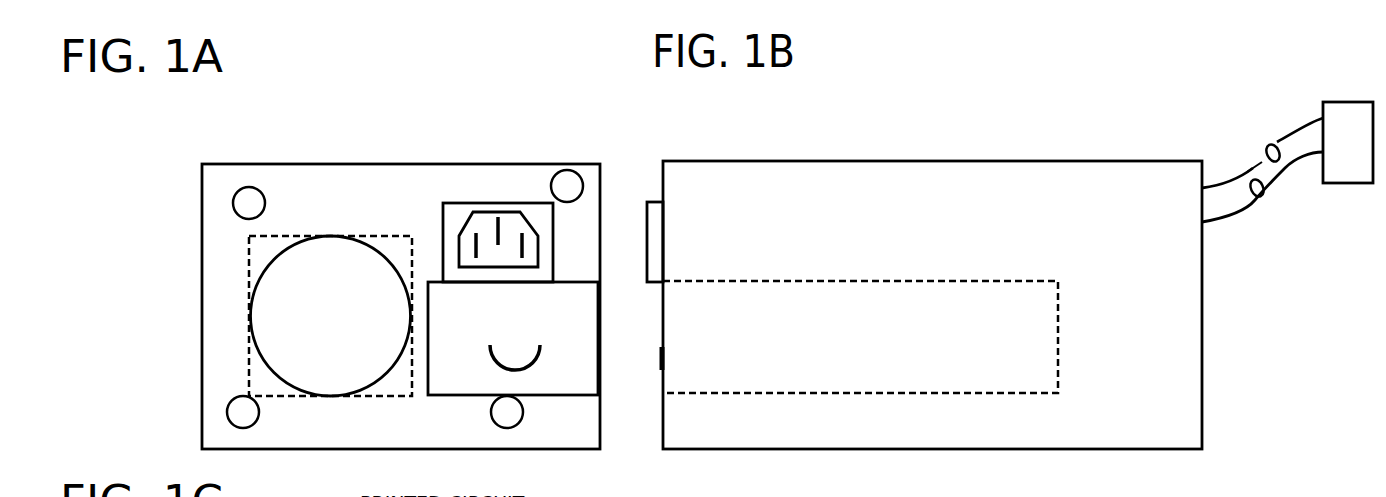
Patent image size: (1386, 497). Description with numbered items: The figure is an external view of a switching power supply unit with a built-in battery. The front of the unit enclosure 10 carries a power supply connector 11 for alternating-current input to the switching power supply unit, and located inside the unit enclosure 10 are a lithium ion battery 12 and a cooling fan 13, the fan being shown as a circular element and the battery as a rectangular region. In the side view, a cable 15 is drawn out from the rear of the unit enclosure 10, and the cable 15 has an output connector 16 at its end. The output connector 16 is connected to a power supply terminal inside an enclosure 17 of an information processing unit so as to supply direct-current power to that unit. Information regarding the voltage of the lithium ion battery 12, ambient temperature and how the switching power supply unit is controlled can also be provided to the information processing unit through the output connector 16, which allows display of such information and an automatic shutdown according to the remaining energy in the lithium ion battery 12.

In FIG. 1A, the unit enclosure 10 is at (487, 163).
In FIG. 1B, the unit enclosure 10 is at (900, 161).
In FIG. 1A, the power supply connector 11 is at (553, 222).
In FIG. 1B, the power supply connector 11 is at (647, 240).
In FIG. 1A, the lithium ion battery 12 is at (553, 346).
In FIG. 1B, the lithium ion battery 12 is at (642, 425).
In FIG. 1A, the cooling fan 13 is at (323, 237).
In FIG. 1B, the cable 15 is at (1233, 175).
In FIG. 1B, the output connector 16 is at (1348, 167).
In FIG. 1B, the enclosure 17 is at (968, 496).